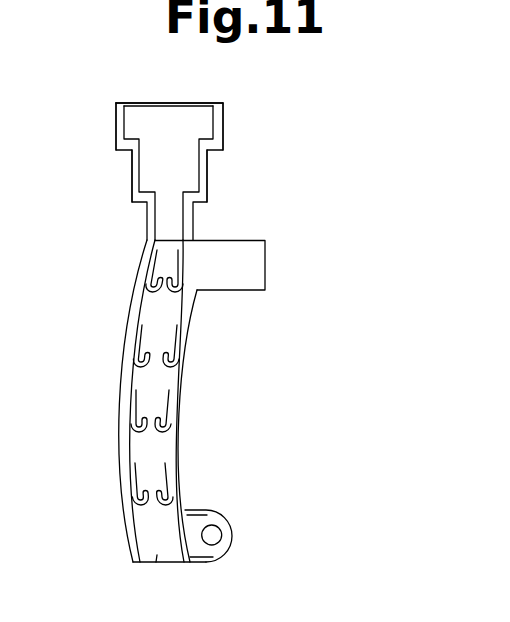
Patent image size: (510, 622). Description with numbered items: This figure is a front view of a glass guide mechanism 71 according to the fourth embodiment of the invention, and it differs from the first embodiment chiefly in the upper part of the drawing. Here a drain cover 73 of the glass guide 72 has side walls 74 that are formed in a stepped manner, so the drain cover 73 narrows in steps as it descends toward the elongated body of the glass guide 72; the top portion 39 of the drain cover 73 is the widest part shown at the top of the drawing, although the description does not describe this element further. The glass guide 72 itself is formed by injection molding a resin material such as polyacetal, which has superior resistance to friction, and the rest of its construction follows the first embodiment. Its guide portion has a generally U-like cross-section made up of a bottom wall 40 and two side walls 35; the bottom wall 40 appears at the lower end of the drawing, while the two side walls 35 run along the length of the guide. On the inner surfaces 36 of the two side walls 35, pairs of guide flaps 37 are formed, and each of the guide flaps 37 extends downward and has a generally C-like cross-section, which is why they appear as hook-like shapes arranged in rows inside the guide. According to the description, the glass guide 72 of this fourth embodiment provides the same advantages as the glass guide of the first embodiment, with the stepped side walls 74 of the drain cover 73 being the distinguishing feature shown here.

The glass guide mechanism 71 is at (271, 115).
The glass guide 72 is at (312, 246).
The top plate 39 is at (131, 103).
The side walls 74 is at (116, 128).
The drain cover 73 is at (208, 178).
The inner surfaces 36 is at (145, 304).
The guide flaps 37 is at (143, 355).
The side walls 35 is at (118, 445).
The bottom wall 40 is at (152, 566).